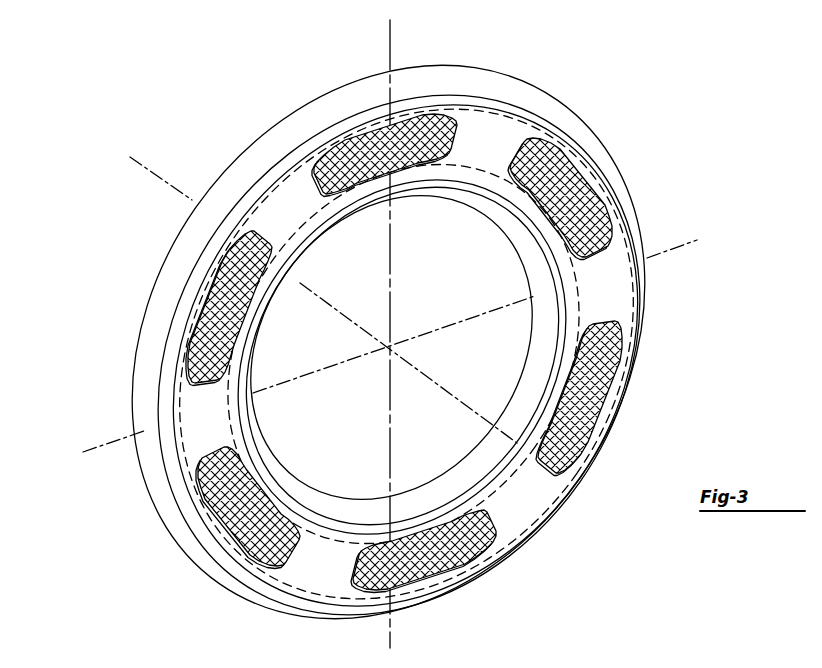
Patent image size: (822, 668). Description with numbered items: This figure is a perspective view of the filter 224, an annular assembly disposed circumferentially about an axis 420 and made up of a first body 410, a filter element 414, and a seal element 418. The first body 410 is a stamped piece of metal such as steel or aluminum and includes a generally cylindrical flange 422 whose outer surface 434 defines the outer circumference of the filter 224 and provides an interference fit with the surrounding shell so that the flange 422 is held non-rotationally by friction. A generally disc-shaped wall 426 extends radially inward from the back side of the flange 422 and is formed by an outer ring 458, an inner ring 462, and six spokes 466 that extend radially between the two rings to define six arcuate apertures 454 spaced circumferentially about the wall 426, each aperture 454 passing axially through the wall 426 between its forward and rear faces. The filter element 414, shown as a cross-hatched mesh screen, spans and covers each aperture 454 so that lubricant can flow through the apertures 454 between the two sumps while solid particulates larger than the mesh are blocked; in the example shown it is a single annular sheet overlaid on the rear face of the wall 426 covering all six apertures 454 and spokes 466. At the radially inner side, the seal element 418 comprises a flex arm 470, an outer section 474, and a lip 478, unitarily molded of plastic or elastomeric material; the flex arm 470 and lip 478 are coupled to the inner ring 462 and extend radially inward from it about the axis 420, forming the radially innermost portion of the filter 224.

The filter 224 is at (640, 223).
The first body 410 is at (344, 103).
The filter element 414 is at (405, 150).
The seal element 418 is at (304, 502).
The axis 420 is at (126, 156).
The flange 422 is at (168, 300).
The wall 426 is at (187, 393).
The outer surface 434 is at (183, 268).
The aperture 454 is at (417, 108).
The outer ring 458 is at (180, 457).
The inner ring 462 is at (250, 470).
The spokes 466 is at (503, 143).
The flex arm 470 is at (523, 383).
The outer section 474 is at (480, 126).
The lip 478 is at (343, 217).